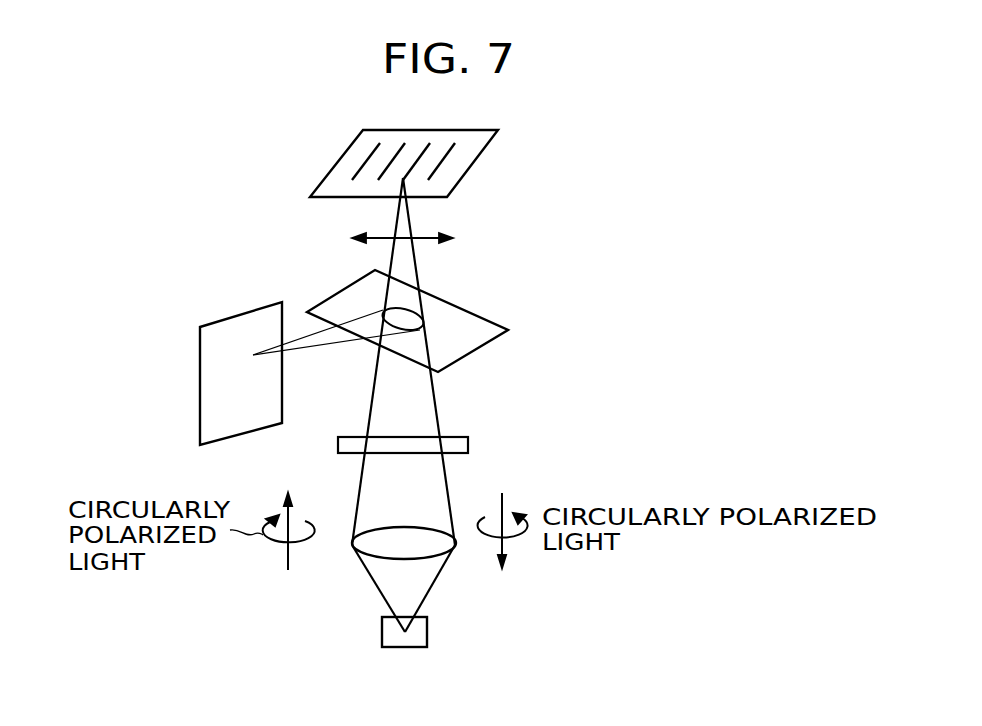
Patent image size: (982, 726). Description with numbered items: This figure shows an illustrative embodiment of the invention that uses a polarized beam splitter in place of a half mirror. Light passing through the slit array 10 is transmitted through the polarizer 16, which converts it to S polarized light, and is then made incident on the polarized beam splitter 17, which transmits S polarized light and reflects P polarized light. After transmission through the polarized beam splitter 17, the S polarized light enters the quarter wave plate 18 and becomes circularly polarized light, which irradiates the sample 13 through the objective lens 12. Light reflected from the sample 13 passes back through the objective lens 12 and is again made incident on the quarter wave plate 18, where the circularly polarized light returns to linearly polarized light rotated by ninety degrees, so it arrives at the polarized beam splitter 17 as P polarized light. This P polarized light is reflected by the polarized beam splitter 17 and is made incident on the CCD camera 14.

The slit array 10 is at (457, 168).
The objective lens 12 is at (427, 548).
The sample 13 is at (420, 628).
The CCD camera 14 is at (225, 337).
The polarizer 16 is at (423, 238).
The polarized beam splitter 17 is at (463, 345).
The quarter wave plate 18 is at (462, 443).